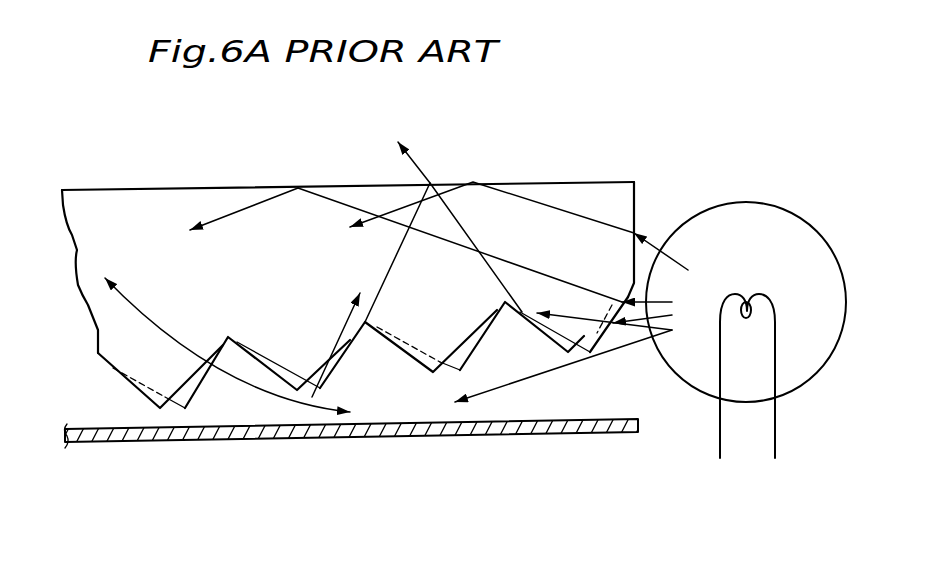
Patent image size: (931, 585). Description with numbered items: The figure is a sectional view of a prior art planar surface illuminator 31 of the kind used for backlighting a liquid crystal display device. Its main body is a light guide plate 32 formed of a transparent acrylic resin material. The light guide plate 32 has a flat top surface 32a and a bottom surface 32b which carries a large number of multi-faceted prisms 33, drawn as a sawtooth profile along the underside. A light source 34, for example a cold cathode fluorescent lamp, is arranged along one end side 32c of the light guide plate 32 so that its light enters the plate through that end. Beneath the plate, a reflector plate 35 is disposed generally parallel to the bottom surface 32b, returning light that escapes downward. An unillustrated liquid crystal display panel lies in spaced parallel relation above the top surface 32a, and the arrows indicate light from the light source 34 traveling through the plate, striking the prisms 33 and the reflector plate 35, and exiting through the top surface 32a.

The planar surface illuminator 31 is at (642, 100).
The light guide plate 32 is at (100, 263).
The top surface 32a is at (137, 189).
The bottom surface 32b is at (112, 368).
The end side 32c is at (634, 202).
The multi-faceted prisms 33 is at (550, 337).
The light source 34 is at (767, 202).
The reflector plate 35 is at (608, 437).